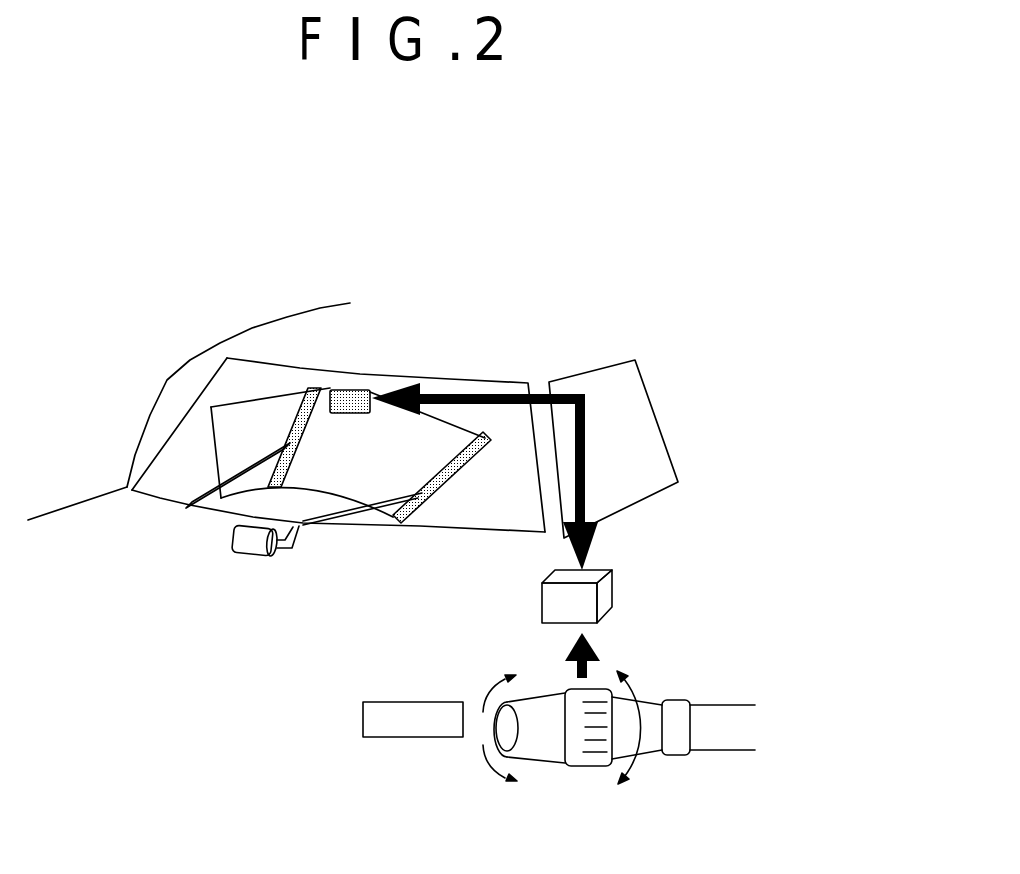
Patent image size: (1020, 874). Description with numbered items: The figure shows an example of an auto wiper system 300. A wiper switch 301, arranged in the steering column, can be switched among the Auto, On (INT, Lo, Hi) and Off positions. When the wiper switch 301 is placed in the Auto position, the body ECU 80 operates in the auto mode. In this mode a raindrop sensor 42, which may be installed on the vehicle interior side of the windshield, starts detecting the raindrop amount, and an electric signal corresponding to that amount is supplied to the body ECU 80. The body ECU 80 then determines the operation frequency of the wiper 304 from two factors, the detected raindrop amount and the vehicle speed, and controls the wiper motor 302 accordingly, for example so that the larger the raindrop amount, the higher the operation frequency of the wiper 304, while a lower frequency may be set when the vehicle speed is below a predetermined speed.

The auto wiper system 300 is at (197, 278).
The raindrop sensor 42 is at (358, 388).
The wiper 304 is at (448, 462).
The wiper motor 302 is at (233, 535).
The body ECU 80 is at (542, 606).
The wiper switch 301 is at (544, 763).